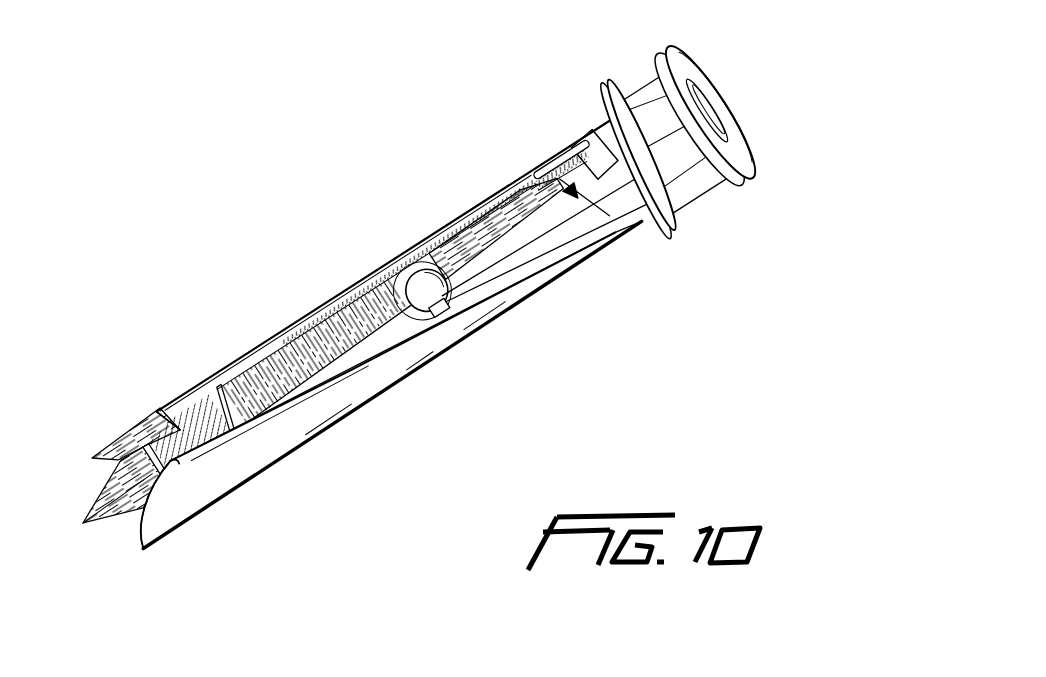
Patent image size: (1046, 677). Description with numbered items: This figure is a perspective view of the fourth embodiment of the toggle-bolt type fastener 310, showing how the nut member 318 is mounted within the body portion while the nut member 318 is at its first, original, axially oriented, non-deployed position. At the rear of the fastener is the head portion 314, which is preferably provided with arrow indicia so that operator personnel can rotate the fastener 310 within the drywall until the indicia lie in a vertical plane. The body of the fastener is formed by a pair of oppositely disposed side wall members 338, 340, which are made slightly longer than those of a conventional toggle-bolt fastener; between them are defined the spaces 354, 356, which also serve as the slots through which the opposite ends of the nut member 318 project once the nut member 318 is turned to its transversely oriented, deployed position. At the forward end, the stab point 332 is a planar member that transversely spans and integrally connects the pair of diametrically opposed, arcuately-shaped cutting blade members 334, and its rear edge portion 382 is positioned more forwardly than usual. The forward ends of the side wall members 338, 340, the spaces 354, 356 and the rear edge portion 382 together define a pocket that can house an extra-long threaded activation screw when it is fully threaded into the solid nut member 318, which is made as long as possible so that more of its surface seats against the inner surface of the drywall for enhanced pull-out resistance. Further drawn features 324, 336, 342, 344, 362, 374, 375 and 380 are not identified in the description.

The toggle-bolt type fastener 310 is at (400, 190).
The head portion 314 is at (686, 62).
The nut member 318 is at (334, 353).
The locking ball 324 is at (437, 312).
The stab point 332 is at (81, 524).
The cutting blade members 334 is at (93, 458).
The collar 336 is at (733, 177).
The side wall member 338 is at (278, 427).
The side wall member 340 is at (312, 300).
The shaft 342 is at (505, 305).
The slot 344 is at (570, 150).
The space 354 is at (260, 385).
The space 356 is at (204, 468).
The tubular member 362 is at (575, 230).
The hub 374 is at (630, 67).
The latch tab 375 is at (544, 198).
The housing distal end 380 is at (160, 405).
The rear edge portion 382 is at (168, 457).